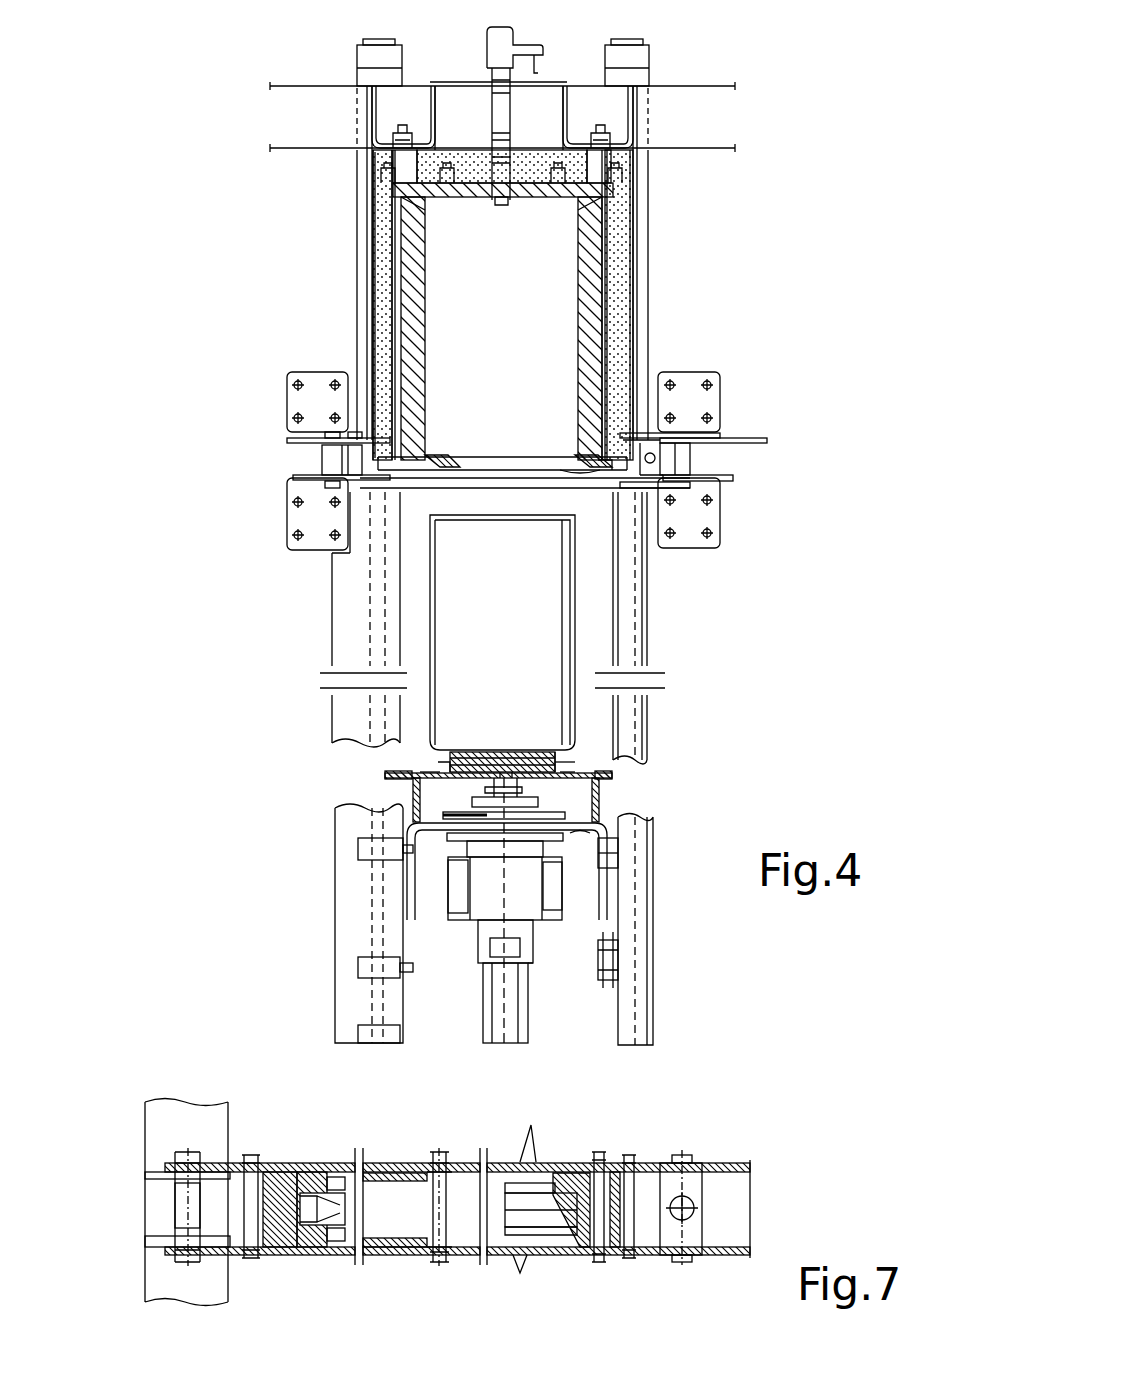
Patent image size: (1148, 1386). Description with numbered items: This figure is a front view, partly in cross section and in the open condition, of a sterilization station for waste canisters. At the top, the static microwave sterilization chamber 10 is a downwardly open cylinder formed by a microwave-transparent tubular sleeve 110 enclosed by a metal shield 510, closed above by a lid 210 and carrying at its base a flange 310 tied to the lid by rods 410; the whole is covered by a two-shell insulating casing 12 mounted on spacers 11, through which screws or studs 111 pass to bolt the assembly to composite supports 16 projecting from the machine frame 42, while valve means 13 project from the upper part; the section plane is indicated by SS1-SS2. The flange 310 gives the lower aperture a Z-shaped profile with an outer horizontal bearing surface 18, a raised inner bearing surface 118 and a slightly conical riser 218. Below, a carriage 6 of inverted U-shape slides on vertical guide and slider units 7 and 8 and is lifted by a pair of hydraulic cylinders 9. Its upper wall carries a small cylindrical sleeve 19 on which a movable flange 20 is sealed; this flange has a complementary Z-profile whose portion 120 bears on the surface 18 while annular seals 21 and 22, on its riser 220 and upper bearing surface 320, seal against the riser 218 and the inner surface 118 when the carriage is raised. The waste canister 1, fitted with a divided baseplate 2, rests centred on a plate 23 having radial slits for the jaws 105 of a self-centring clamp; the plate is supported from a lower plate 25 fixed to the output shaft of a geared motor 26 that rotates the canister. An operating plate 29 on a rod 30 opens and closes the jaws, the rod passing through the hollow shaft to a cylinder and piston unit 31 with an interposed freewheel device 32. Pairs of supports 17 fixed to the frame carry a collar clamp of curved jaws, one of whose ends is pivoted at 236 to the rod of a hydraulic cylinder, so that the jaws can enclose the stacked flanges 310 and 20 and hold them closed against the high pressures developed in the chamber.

In FIG. 4, the frame 42 is at (290, 84).
In FIG. 4, the composite supports 16 is at (640, 122).
In FIG. 4, the vertical double-acting hydraulic cylinder and piston unit 9 is at (650, 55).
In FIG. 4, the valve means 13 is at (506, 32).
In FIG. 4, the casing 12 is at (465, 145).
In FIG. 4, the spacers 11 is at (405, 163).
In FIG. 4, the screws or studs 111 is at (402, 130).
In FIG. 4, the lid 210 is at (540, 193).
In FIG. 4, the sterilization chamber 10 is at (392, 275).
In FIG. 4, the tubular sleeve 110 is at (598, 247).
In FIG. 4, the rods 410 is at (612, 302).
In FIG. 4, the metal shield 510 is at (398, 340).
In FIG. 4, the section plane SS1-SS2 is at (740, 305).
In FIG. 4, the inner horizontal bearing surface 118 is at (606, 466).
In FIG. 4, the riser 218 is at (600, 472).
In FIG. 4, the outer horizontal bearing surface 18 is at (618, 470).
In FIG. 4, the supports 17 is at (693, 478).
In FIG. 4, the pivot 236 is at (652, 464).
In FIG. 7, the pivot 236 is at (670, 1185).
In FIG. 4, the flange 310 is at (648, 436).
In FIG. 7, the flange 310 is at (522, 1200).
In FIG. 4, the canister 1 is at (573, 633).
In FIG. 4, the flange 20 is at (625, 778).
In FIG. 7, the flange 20 is at (537, 1230).
In FIG. 4, the portion 120 is at (625, 774).
In FIG. 4, the riser 220 is at (580, 768).
In FIG. 4, the upper bearing surface 320 is at (590, 766).
In FIG. 4, the annular seal 21 is at (395, 775).
In FIG. 4, the annular seal 22 is at (405, 772).
In FIG. 4, the plate 23 is at (440, 772).
In FIG. 4, the jaws 105 is at (510, 772).
In FIG. 4, the baseplate 2 is at (565, 762).
In FIG. 4, the lower plate 25 is at (445, 816).
In FIG. 4, the operating plate 29 is at (480, 802).
In FIG. 4, the cylindrical sleeve 19 is at (618, 786).
In FIG. 4, the rod 30 is at (500, 875).
In FIG. 4, the geared motor 26 is at (496, 915).
In FIG. 4, the cylinder and piston unit 31 is at (518, 1036).
In FIG. 4, the freewheel device 32 is at (528, 965).
In FIG. 4, the carriage 6 is at (582, 838).
In FIG. 4, the vertical guide and slider unit 8 is at (333, 912).
In FIG. 4, the vertical guide and slider unit 7 is at (655, 909).